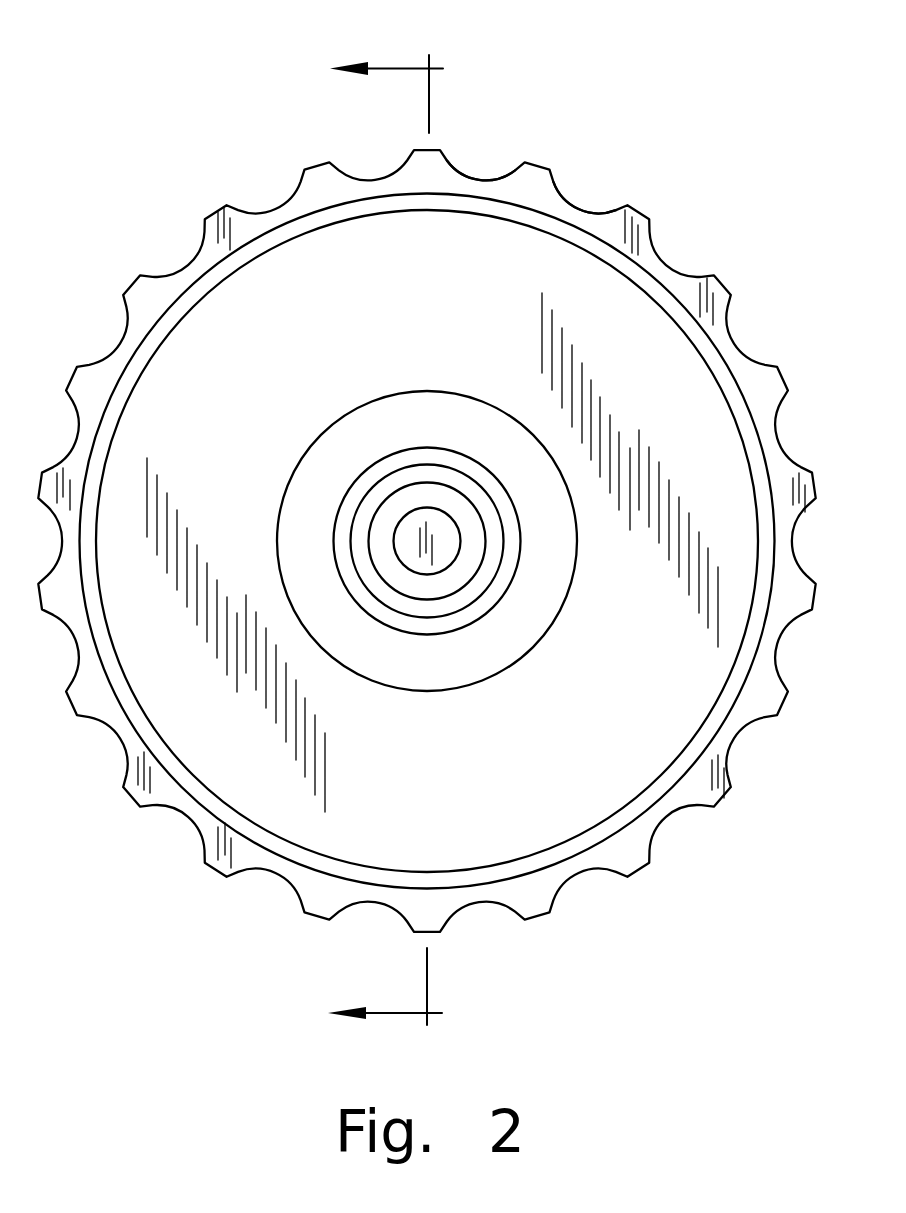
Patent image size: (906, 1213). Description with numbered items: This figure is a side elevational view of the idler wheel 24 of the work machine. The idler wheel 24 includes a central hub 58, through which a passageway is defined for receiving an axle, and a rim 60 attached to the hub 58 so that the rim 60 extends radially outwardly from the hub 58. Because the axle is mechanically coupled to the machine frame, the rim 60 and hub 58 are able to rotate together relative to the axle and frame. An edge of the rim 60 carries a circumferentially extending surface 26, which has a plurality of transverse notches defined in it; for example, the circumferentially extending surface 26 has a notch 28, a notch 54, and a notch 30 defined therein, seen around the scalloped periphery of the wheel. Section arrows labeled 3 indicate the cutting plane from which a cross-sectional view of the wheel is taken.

The section line 3- 3 is at (386, 542).
The idler wheel 24 is at (618, 303).
The circumferentially extending surface 26 is at (630, 210).
The notch 28 is at (469, 178).
The notch 30 is at (728, 358).
The notch 54 is at (573, 211).
The hub 58 is at (438, 670).
The rim 60 is at (215, 765).